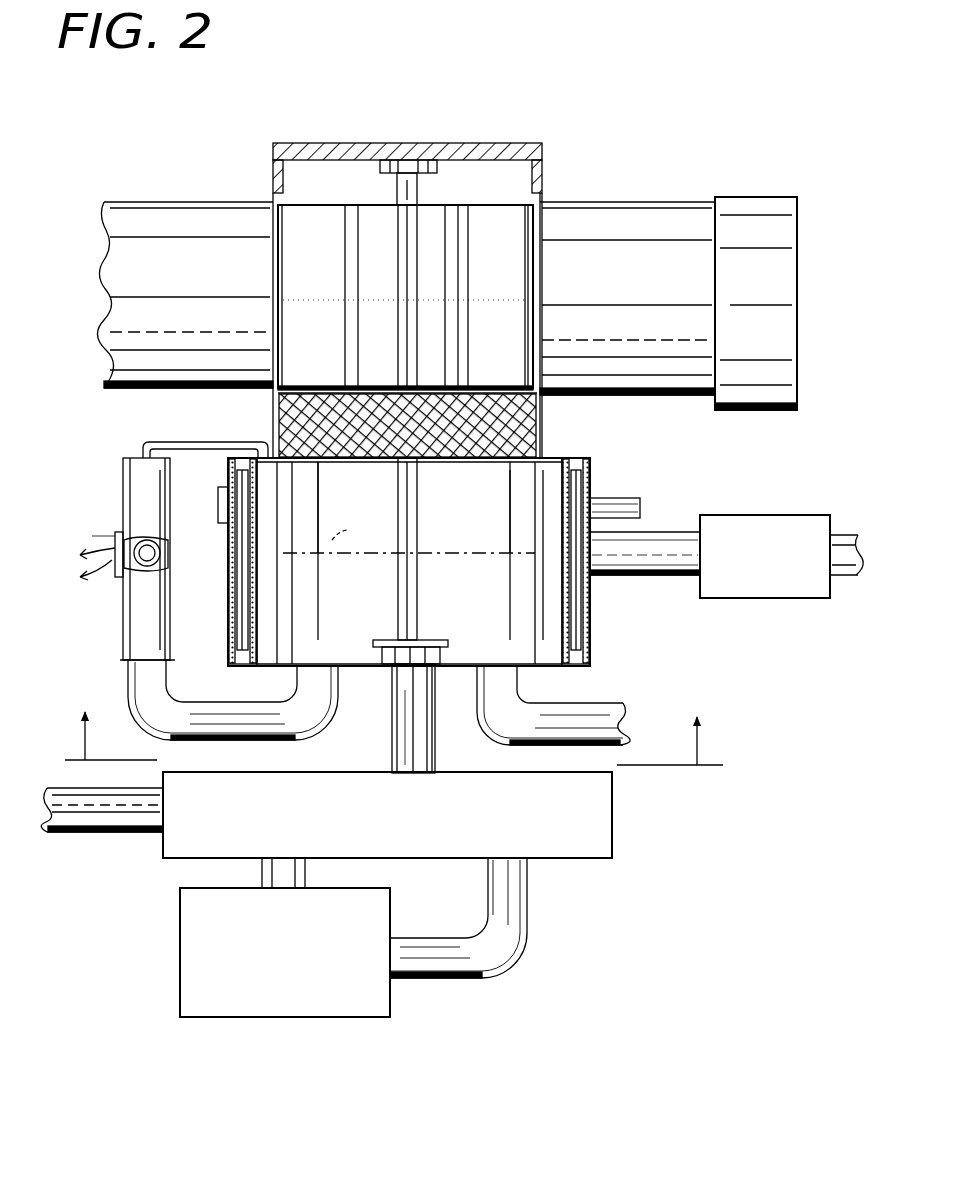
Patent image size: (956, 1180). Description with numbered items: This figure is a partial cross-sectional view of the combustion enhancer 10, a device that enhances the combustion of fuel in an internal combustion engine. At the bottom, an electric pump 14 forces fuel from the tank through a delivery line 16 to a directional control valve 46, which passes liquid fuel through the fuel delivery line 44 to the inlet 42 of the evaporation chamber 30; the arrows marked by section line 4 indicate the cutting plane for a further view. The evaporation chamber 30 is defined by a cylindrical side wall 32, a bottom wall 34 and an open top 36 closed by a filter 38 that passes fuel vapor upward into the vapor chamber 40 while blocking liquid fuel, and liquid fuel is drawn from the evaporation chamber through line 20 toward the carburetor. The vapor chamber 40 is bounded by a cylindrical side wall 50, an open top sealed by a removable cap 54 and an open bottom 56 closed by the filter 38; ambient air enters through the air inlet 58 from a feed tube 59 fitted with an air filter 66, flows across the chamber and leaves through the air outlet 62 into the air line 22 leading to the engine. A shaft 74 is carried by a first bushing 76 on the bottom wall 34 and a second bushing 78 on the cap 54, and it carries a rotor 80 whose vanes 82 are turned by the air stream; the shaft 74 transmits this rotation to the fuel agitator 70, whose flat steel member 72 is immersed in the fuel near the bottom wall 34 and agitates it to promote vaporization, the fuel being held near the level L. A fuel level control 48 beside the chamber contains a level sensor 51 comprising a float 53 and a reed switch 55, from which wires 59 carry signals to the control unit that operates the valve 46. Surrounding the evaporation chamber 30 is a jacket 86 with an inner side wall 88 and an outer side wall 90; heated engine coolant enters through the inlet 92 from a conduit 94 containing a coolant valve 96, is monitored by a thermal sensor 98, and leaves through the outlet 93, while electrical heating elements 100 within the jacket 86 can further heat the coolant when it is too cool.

The device for enhancing the combustion of fuel 10 is at (650, 83).
The electric pump 14 is at (363, 1020).
The delivery line 16 is at (117, 822).
The line 20 is at (605, 720).
The air line 22 is at (165, 222).
The evaporation chamber 30 is at (522, 518).
The cylindrical side wall 32 is at (235, 602).
The bottom wall 34 is at (265, 666).
The open top 36 is at (540, 440).
The filter 38 is at (546, 413).
The vapor chamber 40 is at (478, 125).
The inlet 42 is at (447, 683).
The fuel delivery line 44 is at (420, 758).
The directional valve 46 is at (614, 846).
The fuel level control 48 is at (130, 512).
The cylindrical side wall 50 is at (540, 185).
The level sensor 51 is at (85, 536).
The float 53 is at (200, 551).
The removable cap 54 is at (505, 143).
The reed switch 55 is at (120, 578).
The open bottom 56 is at (295, 404).
The air inlet 58 is at (505, 298).
The feed tube 59 is at (683, 225).
The air outlet 62 is at (295, 263).
The air filter 66 is at (757, 207).
The fuel agitator 70 is at (448, 587).
The flat steel member 72 is at (343, 645).
The shaft 74 is at (397, 190).
The first bushing 76 is at (390, 664).
The second bushing 78 is at (400, 163).
The rotor 80 is at (312, 205).
The vanes 82 is at (413, 340).
The jacket 86 is at (600, 664).
The inner side wall 88 is at (560, 618).
The outer side wall 90 is at (557, 638).
The inlet 92 is at (228, 470).
The outlet 93 is at (225, 498).
The conduit 94 is at (675, 530).
The solenoid valve 96 is at (768, 515).
The thermal sensor 98 is at (640, 483).
The electrical heating elements 100 is at (248, 523).
The section line 4- 4 is at (388, 758).